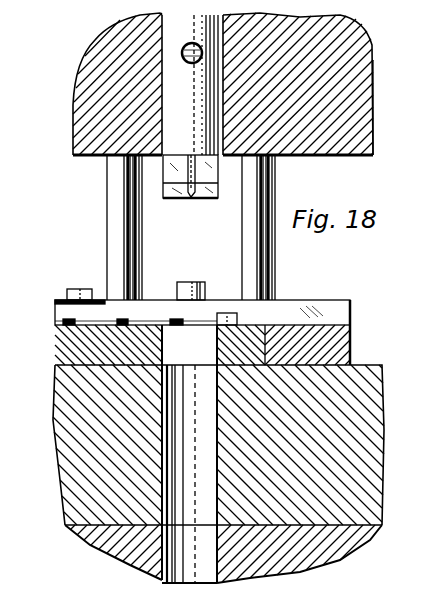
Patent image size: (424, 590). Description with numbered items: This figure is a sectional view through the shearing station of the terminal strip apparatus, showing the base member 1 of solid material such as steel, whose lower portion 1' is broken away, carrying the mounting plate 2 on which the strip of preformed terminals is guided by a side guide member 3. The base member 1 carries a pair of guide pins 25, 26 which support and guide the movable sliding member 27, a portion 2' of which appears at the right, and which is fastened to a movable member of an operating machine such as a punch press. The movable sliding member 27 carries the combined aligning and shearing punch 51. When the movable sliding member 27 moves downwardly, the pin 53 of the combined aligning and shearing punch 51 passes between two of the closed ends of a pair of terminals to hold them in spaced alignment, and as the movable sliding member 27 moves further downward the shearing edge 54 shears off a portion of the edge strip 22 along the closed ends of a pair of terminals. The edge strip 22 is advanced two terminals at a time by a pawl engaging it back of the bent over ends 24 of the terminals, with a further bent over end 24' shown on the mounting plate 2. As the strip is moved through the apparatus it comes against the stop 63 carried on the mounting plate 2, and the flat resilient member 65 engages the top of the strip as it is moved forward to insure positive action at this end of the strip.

The base member 1 is at (228, 445).
The lower base portion 1' is at (232, 554).
The mounting plate 2 is at (224, 332).
The head portion 2' is at (398, 107).
The side guide member 3 is at (345, 516).
The edge strip 22 is at (138, 318).
The bent over ends 24 is at (80, 285).
The contact block 24' is at (199, 290).
The guide pin 25 is at (110, 206).
The guide pin 26 is at (276, 283).
The movable sliding member 27 is at (375, 122).
The combined aligning and shearing punch 51 is at (171, 93).
The pin 53 is at (197, 199).
The shearing edge 54 is at (180, 199).
The stop 63 is at (237, 315).
The flat resilient member 65 is at (68, 296).